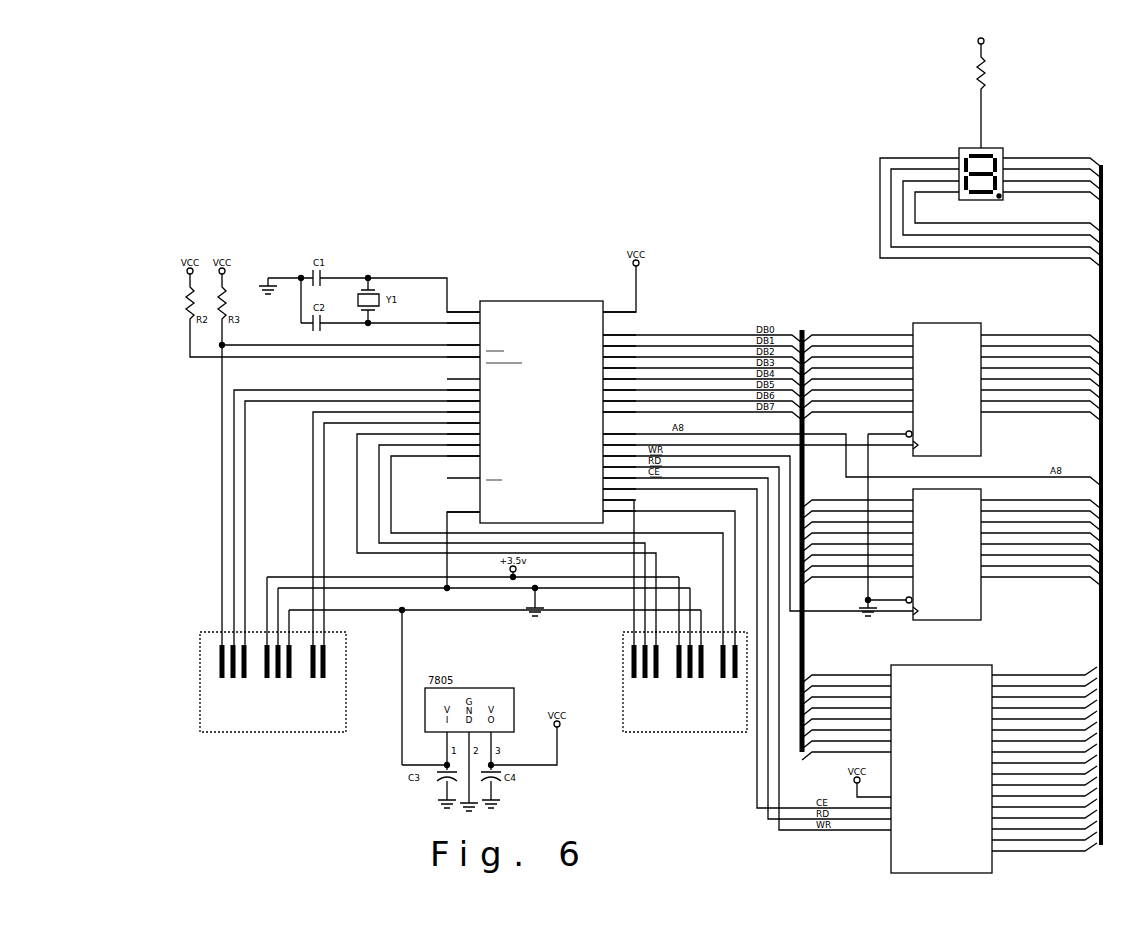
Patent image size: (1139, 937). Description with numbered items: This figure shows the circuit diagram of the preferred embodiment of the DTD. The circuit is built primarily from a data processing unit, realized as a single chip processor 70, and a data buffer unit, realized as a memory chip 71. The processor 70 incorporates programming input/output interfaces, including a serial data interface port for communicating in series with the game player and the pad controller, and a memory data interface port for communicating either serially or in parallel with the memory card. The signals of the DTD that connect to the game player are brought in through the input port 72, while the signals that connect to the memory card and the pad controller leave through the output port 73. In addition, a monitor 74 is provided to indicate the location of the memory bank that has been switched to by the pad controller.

The single chip processor 70 is at (541, 390).
The memory chip 71 is at (951, 526).
The input port 72 is at (685, 700).
The output port 73 is at (273, 700).
The monitor 74 is at (990, 147).